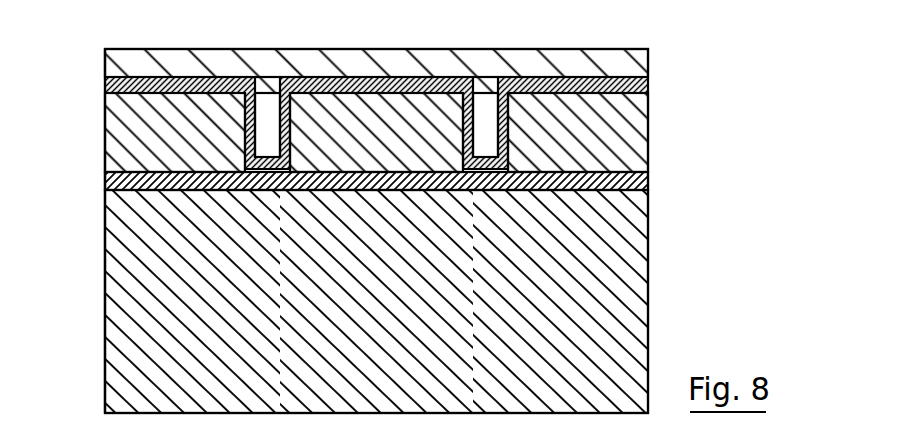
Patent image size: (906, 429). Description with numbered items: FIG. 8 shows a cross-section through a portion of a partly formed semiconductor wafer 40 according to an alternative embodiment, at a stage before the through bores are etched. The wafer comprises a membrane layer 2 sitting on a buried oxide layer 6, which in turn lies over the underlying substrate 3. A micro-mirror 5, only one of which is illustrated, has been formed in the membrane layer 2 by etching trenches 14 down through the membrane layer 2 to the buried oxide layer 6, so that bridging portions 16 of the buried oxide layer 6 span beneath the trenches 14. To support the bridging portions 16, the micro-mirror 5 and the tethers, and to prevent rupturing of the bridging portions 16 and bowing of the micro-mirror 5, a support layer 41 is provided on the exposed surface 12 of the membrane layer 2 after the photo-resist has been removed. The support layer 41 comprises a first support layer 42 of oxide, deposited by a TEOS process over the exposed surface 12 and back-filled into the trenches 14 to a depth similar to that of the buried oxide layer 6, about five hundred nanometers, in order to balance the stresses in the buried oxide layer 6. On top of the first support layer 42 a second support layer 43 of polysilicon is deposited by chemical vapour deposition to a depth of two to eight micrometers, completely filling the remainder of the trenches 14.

The membrane layer 2 is at (644, 131).
The substrate 3 is at (632, 286).
The micro-mirror 5 is at (371, 105).
The buried oxide layer 6 is at (645, 181).
The exposed surface 12 is at (580, 78).
The trench 14 is at (292, 132).
The bridging portion 16 is at (258, 186).
The semiconductor wafer 40 is at (712, 112).
The support layer 41 is at (80, 87).
The first support layer 42 is at (648, 82).
The second support layer 43 is at (433, 58).